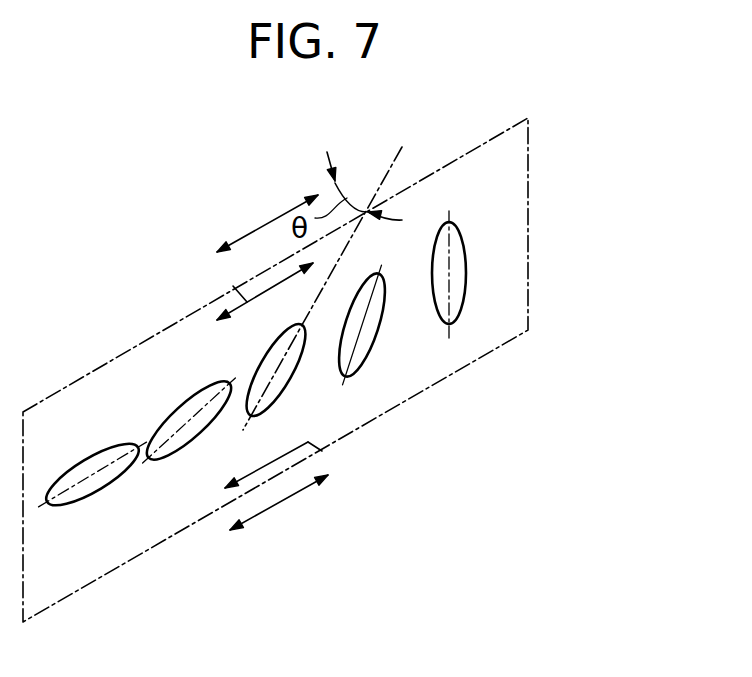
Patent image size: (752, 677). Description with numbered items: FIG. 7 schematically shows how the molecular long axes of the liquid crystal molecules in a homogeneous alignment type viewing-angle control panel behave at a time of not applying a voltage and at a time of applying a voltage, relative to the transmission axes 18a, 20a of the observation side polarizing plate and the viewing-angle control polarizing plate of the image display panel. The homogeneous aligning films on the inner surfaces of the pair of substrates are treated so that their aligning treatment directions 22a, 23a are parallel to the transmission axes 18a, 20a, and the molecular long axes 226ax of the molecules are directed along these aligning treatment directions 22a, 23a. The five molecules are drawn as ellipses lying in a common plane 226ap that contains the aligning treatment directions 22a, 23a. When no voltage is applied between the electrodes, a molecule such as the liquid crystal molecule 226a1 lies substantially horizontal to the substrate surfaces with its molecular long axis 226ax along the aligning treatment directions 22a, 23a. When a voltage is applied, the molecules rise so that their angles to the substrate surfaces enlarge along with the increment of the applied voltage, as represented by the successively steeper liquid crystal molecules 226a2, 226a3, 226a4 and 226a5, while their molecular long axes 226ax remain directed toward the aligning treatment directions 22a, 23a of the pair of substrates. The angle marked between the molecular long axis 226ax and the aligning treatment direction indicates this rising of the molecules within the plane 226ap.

The transmission axis of the observation side polarizing plate 18a is at (278, 503).
The transmission axis of the viewing-angle control polarizing plate 20a is at (267, 221).
The aligning treatment direction of the substrate 22a is at (232, 290).
The aligning treatment direction of the substrate 23a is at (320, 449).
The liquid crystal molecule 226a1 is at (82, 498).
The liquid crystal molecule 226a2 is at (165, 458).
The liquid crystal molecule 226a3 is at (262, 362).
The liquid crystal molecule 226a4 is at (378, 325).
The liquid crystal molecule 226a5 is at (473, 273).
The plane containing the molecular long axes 226ap is at (528, 188).
The molecular long axis 226ax is at (276, 370).